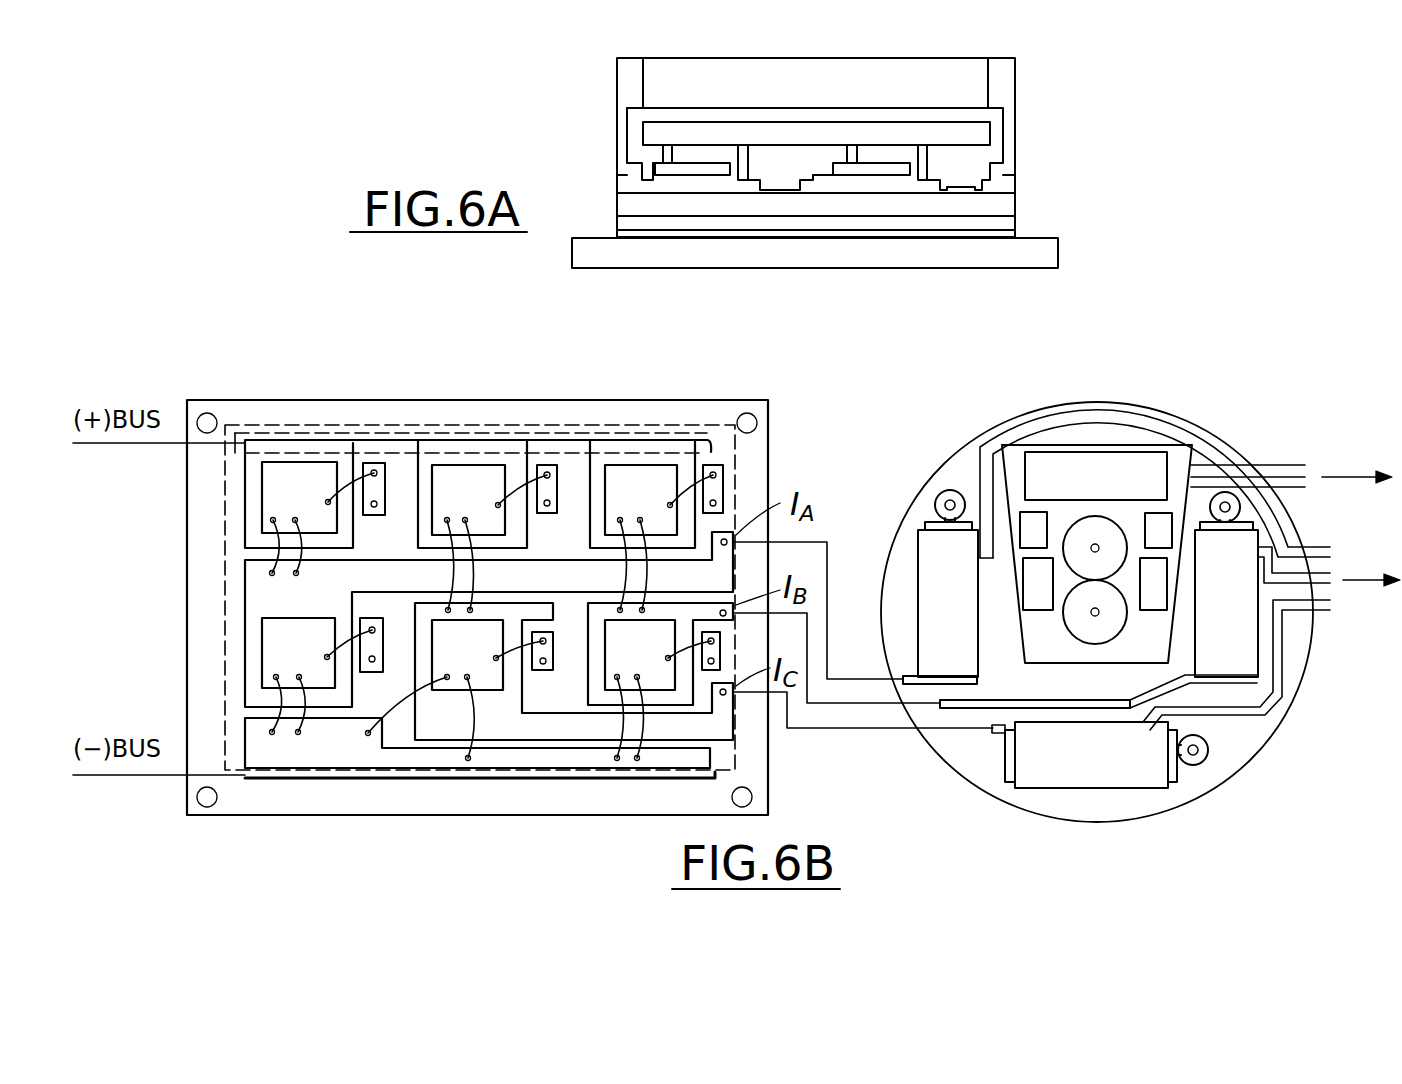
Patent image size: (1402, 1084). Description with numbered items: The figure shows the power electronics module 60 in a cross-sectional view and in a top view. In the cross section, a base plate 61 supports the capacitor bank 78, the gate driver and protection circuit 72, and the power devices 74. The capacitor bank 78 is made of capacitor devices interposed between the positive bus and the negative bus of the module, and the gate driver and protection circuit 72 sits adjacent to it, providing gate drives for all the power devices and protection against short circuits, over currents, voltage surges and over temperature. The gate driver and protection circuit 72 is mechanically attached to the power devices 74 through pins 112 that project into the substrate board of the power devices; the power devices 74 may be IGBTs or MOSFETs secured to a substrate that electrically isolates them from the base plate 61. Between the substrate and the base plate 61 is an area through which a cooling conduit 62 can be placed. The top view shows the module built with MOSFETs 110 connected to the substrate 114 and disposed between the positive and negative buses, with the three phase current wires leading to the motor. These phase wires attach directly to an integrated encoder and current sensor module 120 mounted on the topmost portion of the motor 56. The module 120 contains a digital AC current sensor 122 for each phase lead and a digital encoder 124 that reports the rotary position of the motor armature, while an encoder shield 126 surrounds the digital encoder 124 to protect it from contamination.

In FIG. 6B, the motor 56 is at (1011, 410).
In FIG. 6A, the power electronics module 60 is at (1030, 87).
In FIG. 6B, the power electronics module 60 is at (850, 370).
In FIG. 6A, the base plate 61 is at (1063, 240).
In FIG. 6A, the cooling conduit 62 is at (616, 234).
In FIG. 6A, the gate driver and protection circuit 72 is at (1008, 126).
In FIG. 6A, the power devices 74 is at (922, 170).
In FIG. 6A, the capacitor bank 78 is at (925, 72).
In FIG. 6B, the MOSFETs 110 is at (350, 443).
In FIG. 6A, the pins 112 is at (660, 153).
In FIG. 6A, the substrate 114 is at (1003, 205).
In FIG. 6B, the substrate 114 is at (676, 405).
In FIG. 6B, the integrated encoder and current sensor module 120 is at (980, 767).
In FIG. 6B, the digital AC current sensor 122 is at (1155, 777).
In FIG. 6B, the digital encoder 124 is at (1122, 515).
In FIG. 6B, the encoder shield 126 is at (1097, 427).